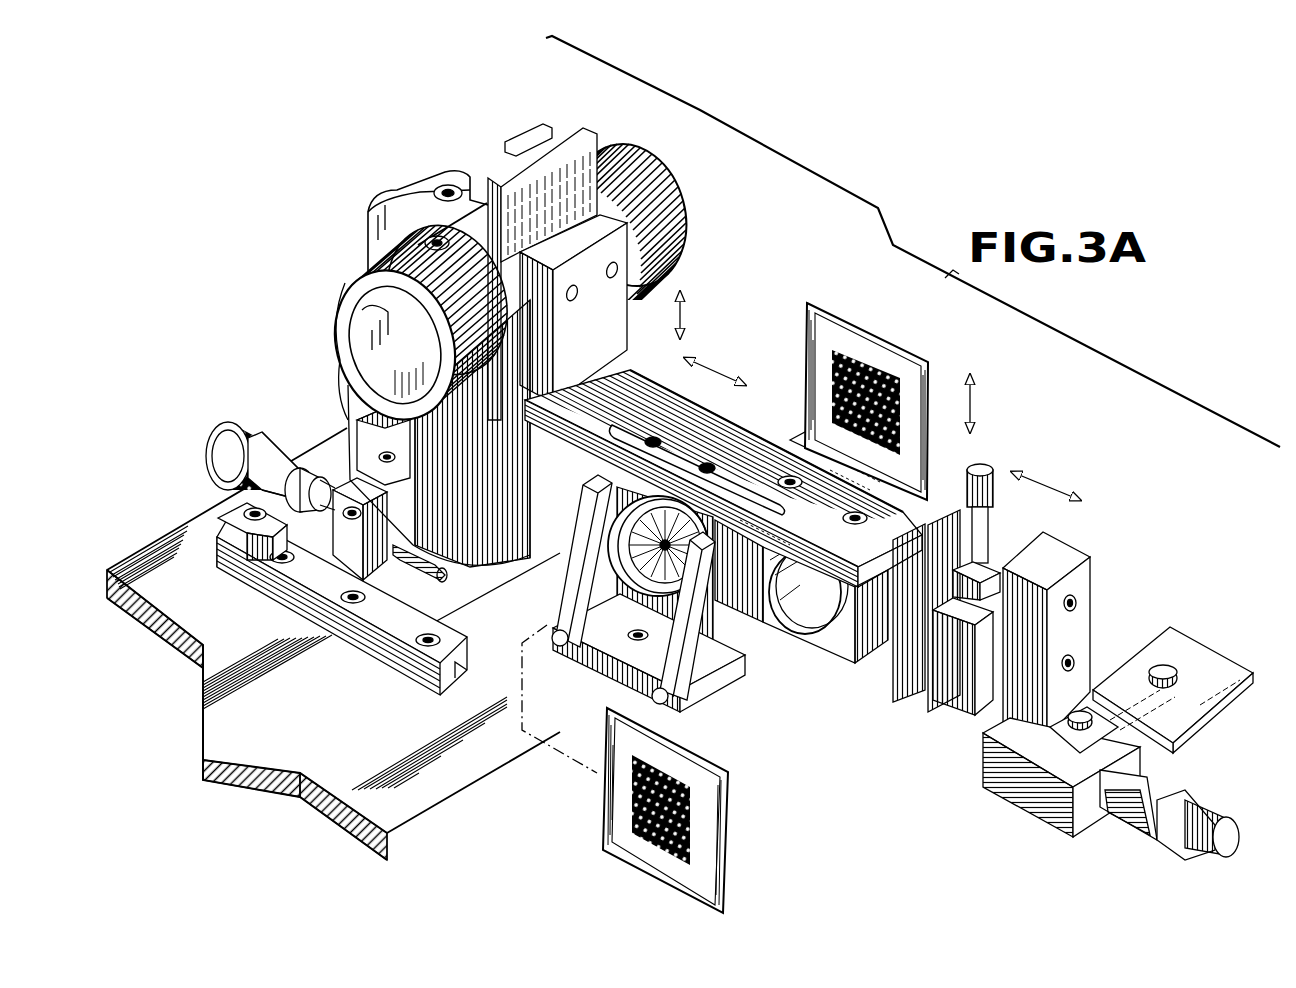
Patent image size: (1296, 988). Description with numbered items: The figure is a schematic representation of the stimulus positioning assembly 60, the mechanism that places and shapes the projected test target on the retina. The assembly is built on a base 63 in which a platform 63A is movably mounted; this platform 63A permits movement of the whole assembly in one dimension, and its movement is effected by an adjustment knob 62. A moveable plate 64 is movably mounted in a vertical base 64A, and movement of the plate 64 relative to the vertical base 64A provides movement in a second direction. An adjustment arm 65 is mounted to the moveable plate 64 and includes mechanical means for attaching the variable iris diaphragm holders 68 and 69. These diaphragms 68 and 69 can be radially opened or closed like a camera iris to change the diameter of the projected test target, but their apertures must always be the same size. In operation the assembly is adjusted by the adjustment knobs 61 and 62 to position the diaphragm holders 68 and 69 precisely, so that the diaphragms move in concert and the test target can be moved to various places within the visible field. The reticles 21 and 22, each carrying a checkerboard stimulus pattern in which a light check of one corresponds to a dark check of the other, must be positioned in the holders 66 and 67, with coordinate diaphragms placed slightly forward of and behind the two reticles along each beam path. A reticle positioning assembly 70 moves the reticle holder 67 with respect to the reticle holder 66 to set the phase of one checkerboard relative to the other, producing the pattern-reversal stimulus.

The reticle 21 is at (730, 773).
The reticle 22 is at (910, 350).
The stimulus positioning assembly 60 is at (362, 198).
The adjustment knob 61 is at (417, 325).
The adjustment knob 62 is at (205, 437).
The base 63 is at (369, 653).
The platform 63A is at (492, 567).
The moveable plate 64 is at (514, 254).
The vertical base 64A is at (486, 222).
The adjustment arm 65 is at (663, 276).
The reticle holder 66 is at (650, 597).
The reticle holder 67 is at (797, 448).
The variable iris diaphragm holder 68 is at (590, 652).
The variable iris diaphragm holder 69 is at (824, 605).
The reticle positioning assembly 70 is at (1067, 553).